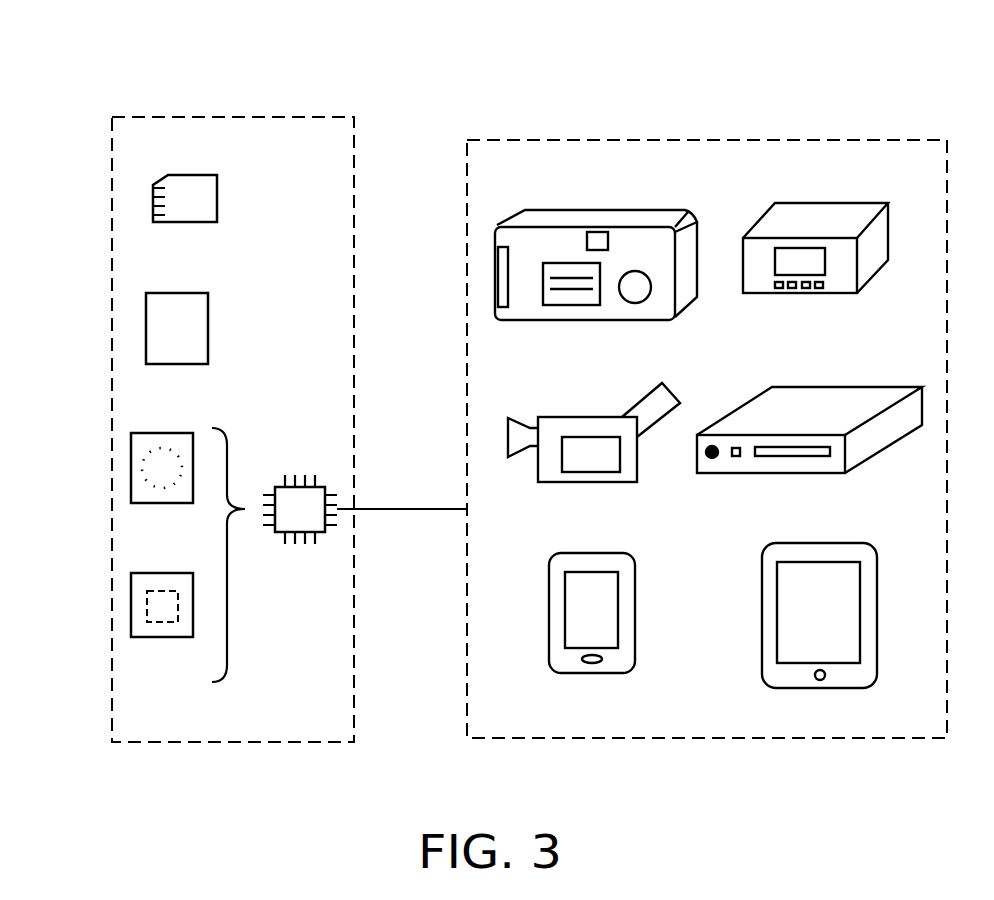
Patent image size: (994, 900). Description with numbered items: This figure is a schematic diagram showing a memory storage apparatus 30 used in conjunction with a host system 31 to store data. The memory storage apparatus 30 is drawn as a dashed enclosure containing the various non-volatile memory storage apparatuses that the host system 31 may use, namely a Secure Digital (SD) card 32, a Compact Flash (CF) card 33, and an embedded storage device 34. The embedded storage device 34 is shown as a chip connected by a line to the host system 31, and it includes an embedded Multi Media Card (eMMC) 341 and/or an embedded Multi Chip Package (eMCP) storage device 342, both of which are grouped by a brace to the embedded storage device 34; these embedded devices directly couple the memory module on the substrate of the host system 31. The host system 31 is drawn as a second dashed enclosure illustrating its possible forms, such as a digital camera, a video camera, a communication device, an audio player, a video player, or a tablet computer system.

The memory storage apparatus 30 is at (221, 117).
The host system 31 is at (631, 140).
The Secure Digital (SD) card 32 is at (153, 203).
The Compact Flash (CF) card 33 is at (146, 328).
The embedded storage device 34 is at (300, 483).
The embedded Multi Media Card (eMMC) 341 is at (131, 470).
The embedded Multi Chip Package (eMCP) storage device 342 is at (131, 605).